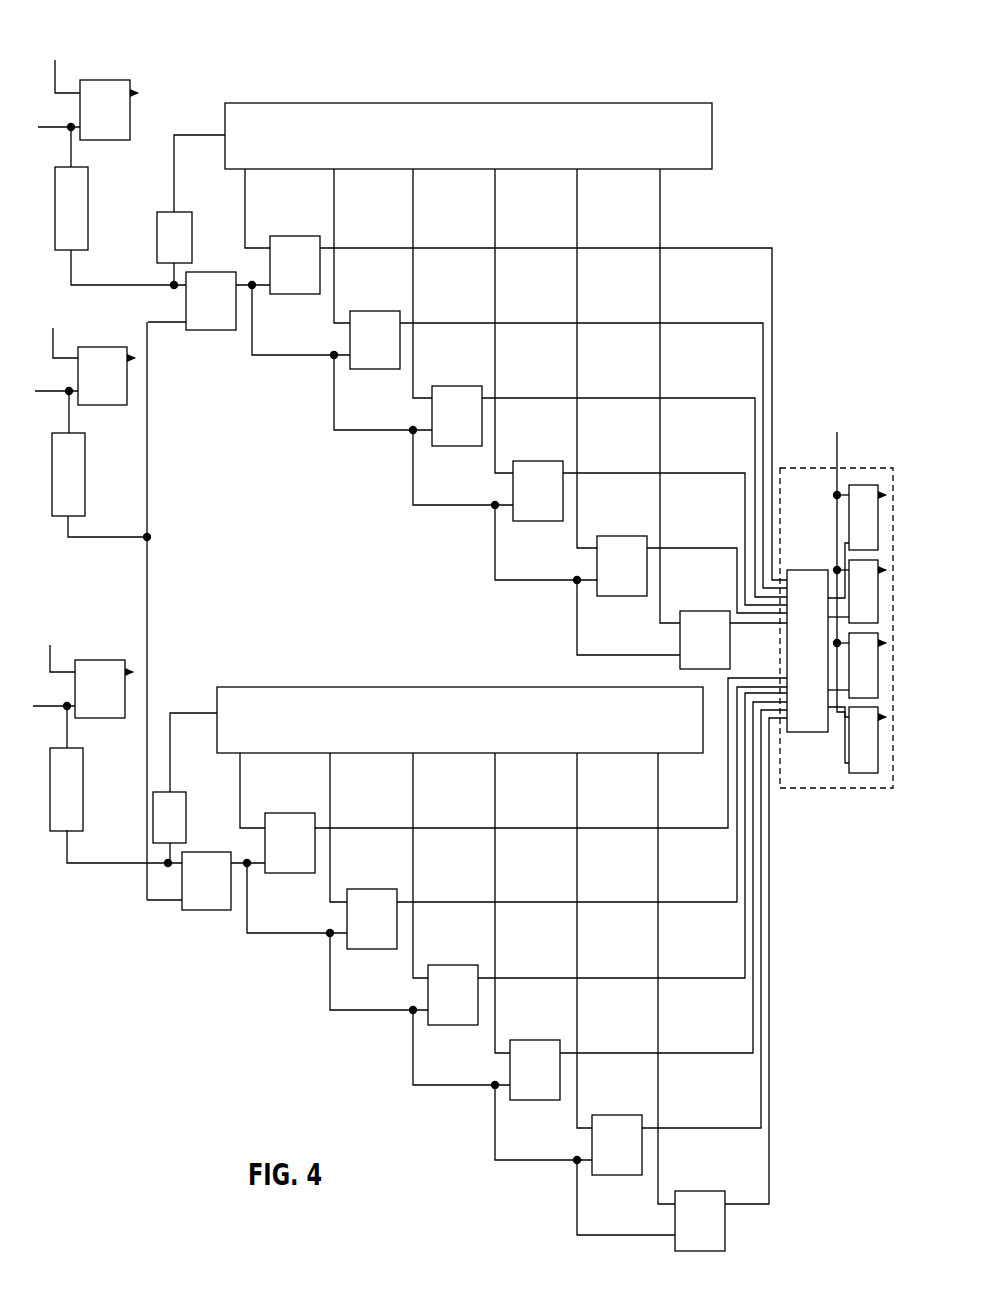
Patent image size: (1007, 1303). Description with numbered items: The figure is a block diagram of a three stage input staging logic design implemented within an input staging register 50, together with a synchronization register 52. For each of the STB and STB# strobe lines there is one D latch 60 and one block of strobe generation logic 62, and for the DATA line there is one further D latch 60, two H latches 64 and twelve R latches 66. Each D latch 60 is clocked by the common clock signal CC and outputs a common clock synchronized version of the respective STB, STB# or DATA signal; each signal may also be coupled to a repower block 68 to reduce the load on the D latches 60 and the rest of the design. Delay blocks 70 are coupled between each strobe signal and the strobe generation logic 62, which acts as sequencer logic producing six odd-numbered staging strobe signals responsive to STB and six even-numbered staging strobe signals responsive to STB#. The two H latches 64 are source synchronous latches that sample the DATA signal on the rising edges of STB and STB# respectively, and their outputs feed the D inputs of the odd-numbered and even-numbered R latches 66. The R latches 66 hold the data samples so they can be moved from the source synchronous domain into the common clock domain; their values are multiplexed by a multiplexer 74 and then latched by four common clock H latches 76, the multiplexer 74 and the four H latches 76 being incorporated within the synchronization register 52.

The input staging register 50 is at (768, 73).
The synchronization register 52 is at (790, 464).
The D latch 60 is at (108, 80).
The strobe generation logic 62 is at (577, 103).
The H latch 64 is at (198, 330).
The R latch 66 is at (282, 293).
The repower block 68 is at (88, 218).
The delay block 70 is at (157, 254).
The multiplexer 74 is at (797, 570).
The H latch 76 is at (862, 485).